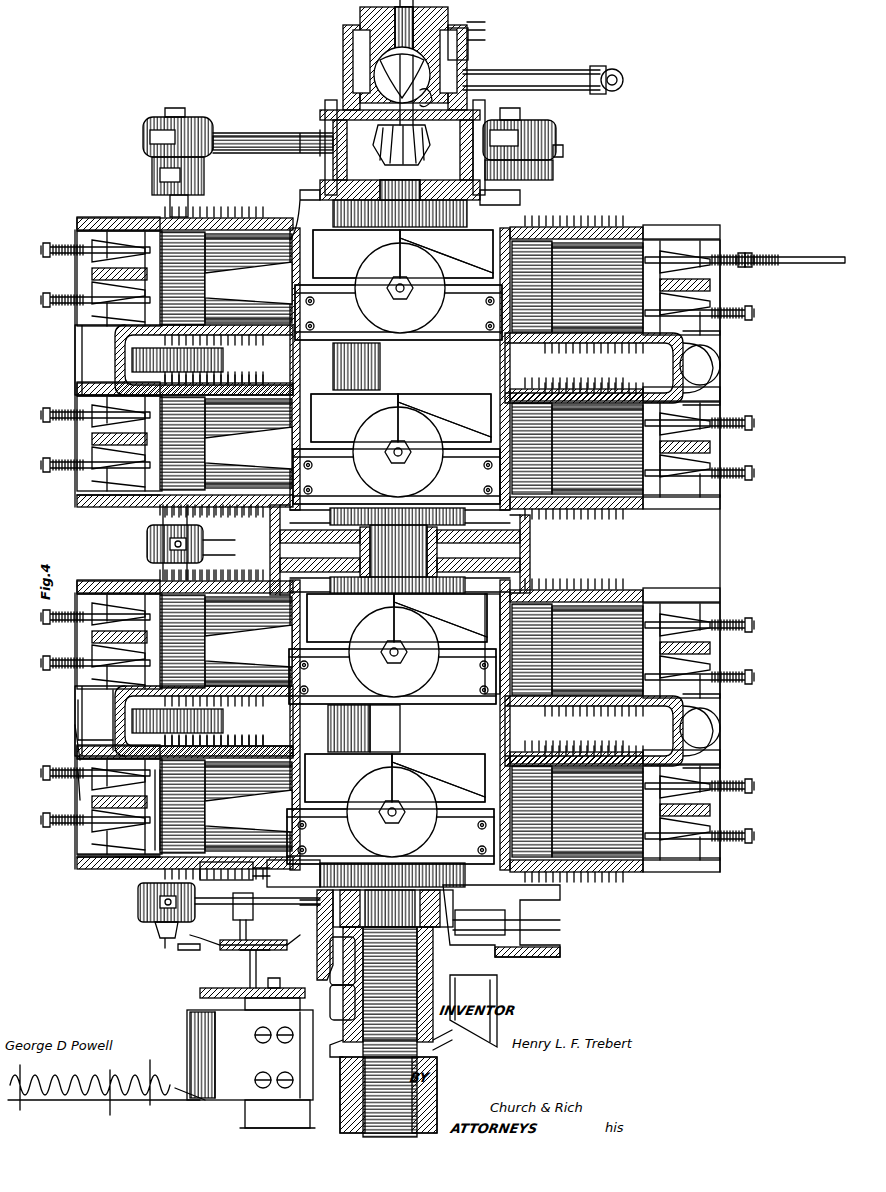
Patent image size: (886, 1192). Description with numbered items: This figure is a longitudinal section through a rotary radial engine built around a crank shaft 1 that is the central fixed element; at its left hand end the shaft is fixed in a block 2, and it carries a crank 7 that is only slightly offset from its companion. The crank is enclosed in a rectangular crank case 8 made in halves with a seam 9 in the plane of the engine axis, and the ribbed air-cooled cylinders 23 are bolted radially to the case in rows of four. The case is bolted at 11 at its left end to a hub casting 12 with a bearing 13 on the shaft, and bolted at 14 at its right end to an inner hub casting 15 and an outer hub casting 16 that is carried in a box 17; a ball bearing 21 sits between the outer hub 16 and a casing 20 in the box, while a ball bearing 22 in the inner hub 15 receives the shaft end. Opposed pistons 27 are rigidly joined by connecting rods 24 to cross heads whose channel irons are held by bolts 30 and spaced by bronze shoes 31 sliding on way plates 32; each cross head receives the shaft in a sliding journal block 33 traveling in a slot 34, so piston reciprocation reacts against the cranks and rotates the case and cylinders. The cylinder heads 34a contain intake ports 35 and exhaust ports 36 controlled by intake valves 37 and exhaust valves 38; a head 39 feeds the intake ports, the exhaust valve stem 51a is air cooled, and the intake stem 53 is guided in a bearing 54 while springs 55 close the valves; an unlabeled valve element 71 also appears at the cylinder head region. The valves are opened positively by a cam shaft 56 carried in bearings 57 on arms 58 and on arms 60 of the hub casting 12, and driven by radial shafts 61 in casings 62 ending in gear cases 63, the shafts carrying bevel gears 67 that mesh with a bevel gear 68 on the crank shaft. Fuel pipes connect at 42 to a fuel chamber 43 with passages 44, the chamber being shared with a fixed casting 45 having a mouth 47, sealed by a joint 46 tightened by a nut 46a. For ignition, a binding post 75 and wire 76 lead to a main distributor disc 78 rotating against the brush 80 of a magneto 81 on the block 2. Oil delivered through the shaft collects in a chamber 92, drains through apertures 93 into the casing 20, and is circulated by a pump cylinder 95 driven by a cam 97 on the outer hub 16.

The crank shaft 1 is at (385, 222).
The block 2 is at (338, 1060).
The crank 7 is at (382, 362).
The crank case 8 is at (290, 700).
The seam 9 is at (400, 718).
The bolting 11 is at (495, 710).
The hub casting 12 is at (318, 935).
The bearing 13 is at (393, 908).
The bolting 14 is at (327, 120).
The inner hub casting 15 is at (320, 185).
The outer hub casting 16 is at (470, 28).
The box 17 is at (362, 20).
The casing 20 is at (335, 112).
The ball bearing 21 is at (399, 74).
The ball bearing 22 is at (320, 200).
The cylinders 23 is at (600, 372).
The connecting rods 24 is at (442, 522).
The pistons 27 is at (394, 547).
The bolts 30 is at (394, 574).
The bronze shoes 31 is at (352, 516).
The way plates 32 is at (455, 715).
The journal block 33 is at (125, 705).
The slot 34 is at (95, 860).
The cylinder heads 34a is at (120, 222).
The intake ports 35 is at (113, 712).
The exhaust ports 36 is at (120, 862).
The intake valves 37 is at (157, 770).
The exhaust valves 38 is at (160, 812).
The head 39 is at (76, 352).
The connection 42 is at (225, 870).
The fuel chamber 43 is at (340, 961).
The fuel passages 44 is at (505, 920).
The casting 45 is at (342, 1075).
The air-tight joint 46 is at (340, 1002).
The nut 46a is at (452, 1042).
The mouth 47 is at (473, 1011).
The valve stem 51a is at (45, 619).
The valve stem 53 is at (75, 762).
The bearing 54 is at (95, 742).
The springs 55 is at (76, 720).
The cam shaft 56 is at (150, 522).
The bearings 57 is at (155, 930).
The arms 58 is at (222, 575).
The arms 60 is at (233, 915).
The radial shafts 61 is at (372, 715).
The casings 62 is at (270, 133).
The gear cases 63 is at (160, 120).
The bevel gears 67 is at (395, 125).
The bevel gear 68 is at (480, 202).
The valve 71 is at (48, 773).
The binding post 75 is at (178, 947).
The wire 76 is at (200, 945).
The main distributor disc 78 is at (245, 960).
The brush 80 is at (262, 940).
The magneto 81 is at (251, 1053).
The collecting chamber 92 is at (403, 90).
The apertures 93 is at (421, 95).
The pump cylinder 95 is at (535, 70).
The cam 97 is at (345, 45).